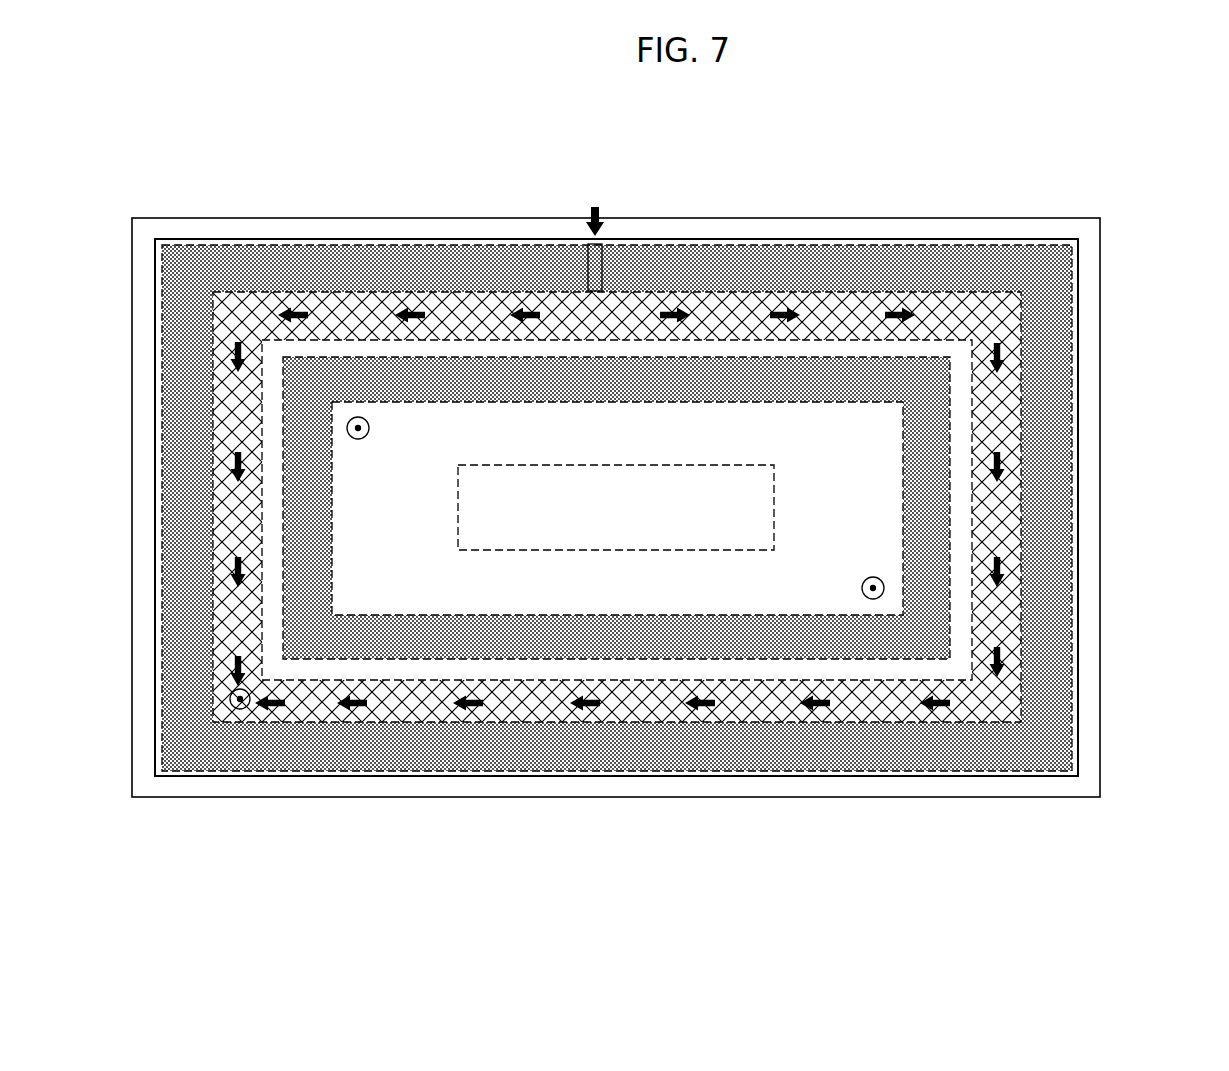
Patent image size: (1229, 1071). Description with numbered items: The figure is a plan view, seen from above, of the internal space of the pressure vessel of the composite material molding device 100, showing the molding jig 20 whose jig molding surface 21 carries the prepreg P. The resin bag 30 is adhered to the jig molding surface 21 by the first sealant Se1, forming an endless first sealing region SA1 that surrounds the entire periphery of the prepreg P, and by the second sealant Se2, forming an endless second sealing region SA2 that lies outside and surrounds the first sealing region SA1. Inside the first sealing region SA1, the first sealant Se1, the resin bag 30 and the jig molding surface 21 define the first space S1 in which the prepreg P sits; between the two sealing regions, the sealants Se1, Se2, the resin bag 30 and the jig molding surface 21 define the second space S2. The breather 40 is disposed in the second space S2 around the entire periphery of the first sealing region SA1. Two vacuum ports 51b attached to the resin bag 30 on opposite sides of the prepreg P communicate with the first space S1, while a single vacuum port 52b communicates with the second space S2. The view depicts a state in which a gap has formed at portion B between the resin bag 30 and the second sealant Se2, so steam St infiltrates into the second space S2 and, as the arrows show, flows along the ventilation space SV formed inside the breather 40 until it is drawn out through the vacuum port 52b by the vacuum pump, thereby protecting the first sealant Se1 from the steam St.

The composite material molding device 100 is at (1068, 149).
The molding jig 20 is at (154, 228).
The jig molding surface 21 is at (263, 228).
The resin bag 30 is at (716, 242).
The breather 40 is at (404, 305).
The vacuum port 51b is at (370, 428).
The vacuum port 52b is at (240, 710).
The portion B is at (590, 258).
The steam St is at (595, 207).
The first sealant Se1 is at (822, 370).
The second sealant Se2 is at (925, 262).
The first sealing region SA1 is at (335, 537).
The second sealing region SA2 is at (1075, 487).
The first space S1 is at (611, 595).
The second space S2 is at (950, 570).
The prepreg P is at (680, 490).
The ventilation space SV is at (505, 724).